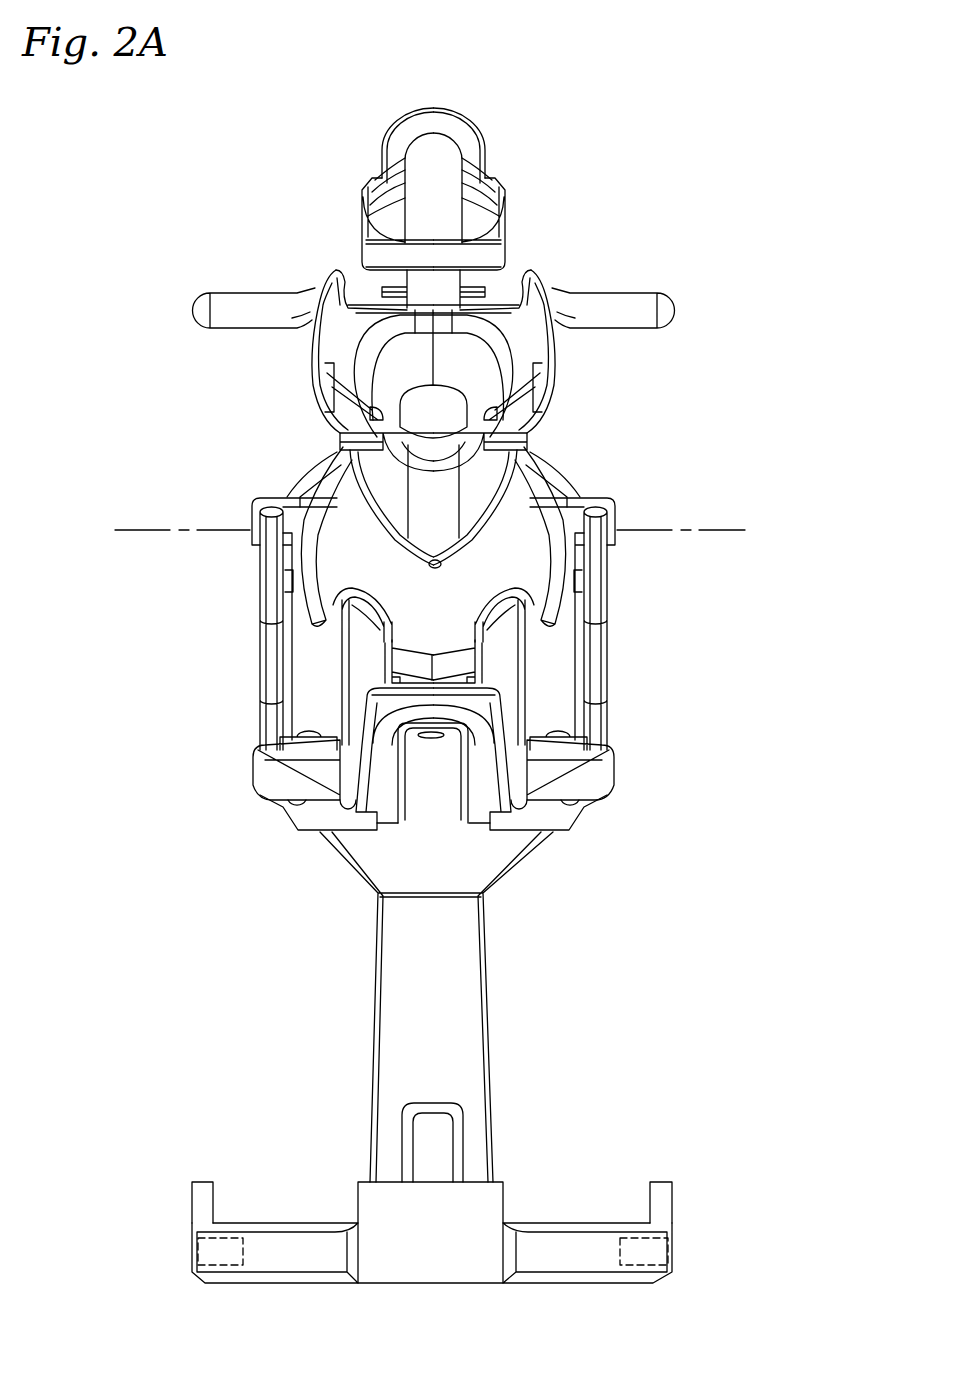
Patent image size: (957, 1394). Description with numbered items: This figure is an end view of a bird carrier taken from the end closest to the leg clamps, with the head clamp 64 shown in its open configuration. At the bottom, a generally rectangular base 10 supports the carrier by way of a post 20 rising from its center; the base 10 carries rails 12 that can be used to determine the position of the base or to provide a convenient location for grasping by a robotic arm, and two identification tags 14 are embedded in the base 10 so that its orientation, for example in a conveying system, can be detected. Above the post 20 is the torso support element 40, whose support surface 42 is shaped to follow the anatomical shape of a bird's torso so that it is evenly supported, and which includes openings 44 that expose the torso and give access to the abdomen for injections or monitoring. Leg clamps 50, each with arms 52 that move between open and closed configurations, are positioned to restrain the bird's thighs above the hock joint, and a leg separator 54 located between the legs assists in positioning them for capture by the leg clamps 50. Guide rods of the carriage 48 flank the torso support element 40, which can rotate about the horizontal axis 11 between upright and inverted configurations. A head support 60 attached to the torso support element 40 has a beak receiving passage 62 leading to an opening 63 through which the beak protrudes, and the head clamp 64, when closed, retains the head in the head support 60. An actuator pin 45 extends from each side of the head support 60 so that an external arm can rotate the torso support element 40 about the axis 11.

The base 10 is at (555, 1225).
The axis 11 is at (708, 530).
The rails 12 is at (205, 1182).
The identification tag 14 is at (203, 1240).
The post 20 is at (500, 1045).
The torso support element 40 is at (560, 490).
The support surface 42 is at (444, 605).
The openings 44 is at (380, 603).
The actuator pin 45 is at (237, 293).
The carriage 48 is at (262, 612).
The leg clamps 50 is at (240, 816).
The arms 52 is at (258, 772).
The leg separator 54 is at (447, 698).
The head support 60 is at (408, 370).
The beak receiving passage 62 is at (457, 377).
The opening 63 is at (445, 413).
The head clamp 64 is at (472, 130).